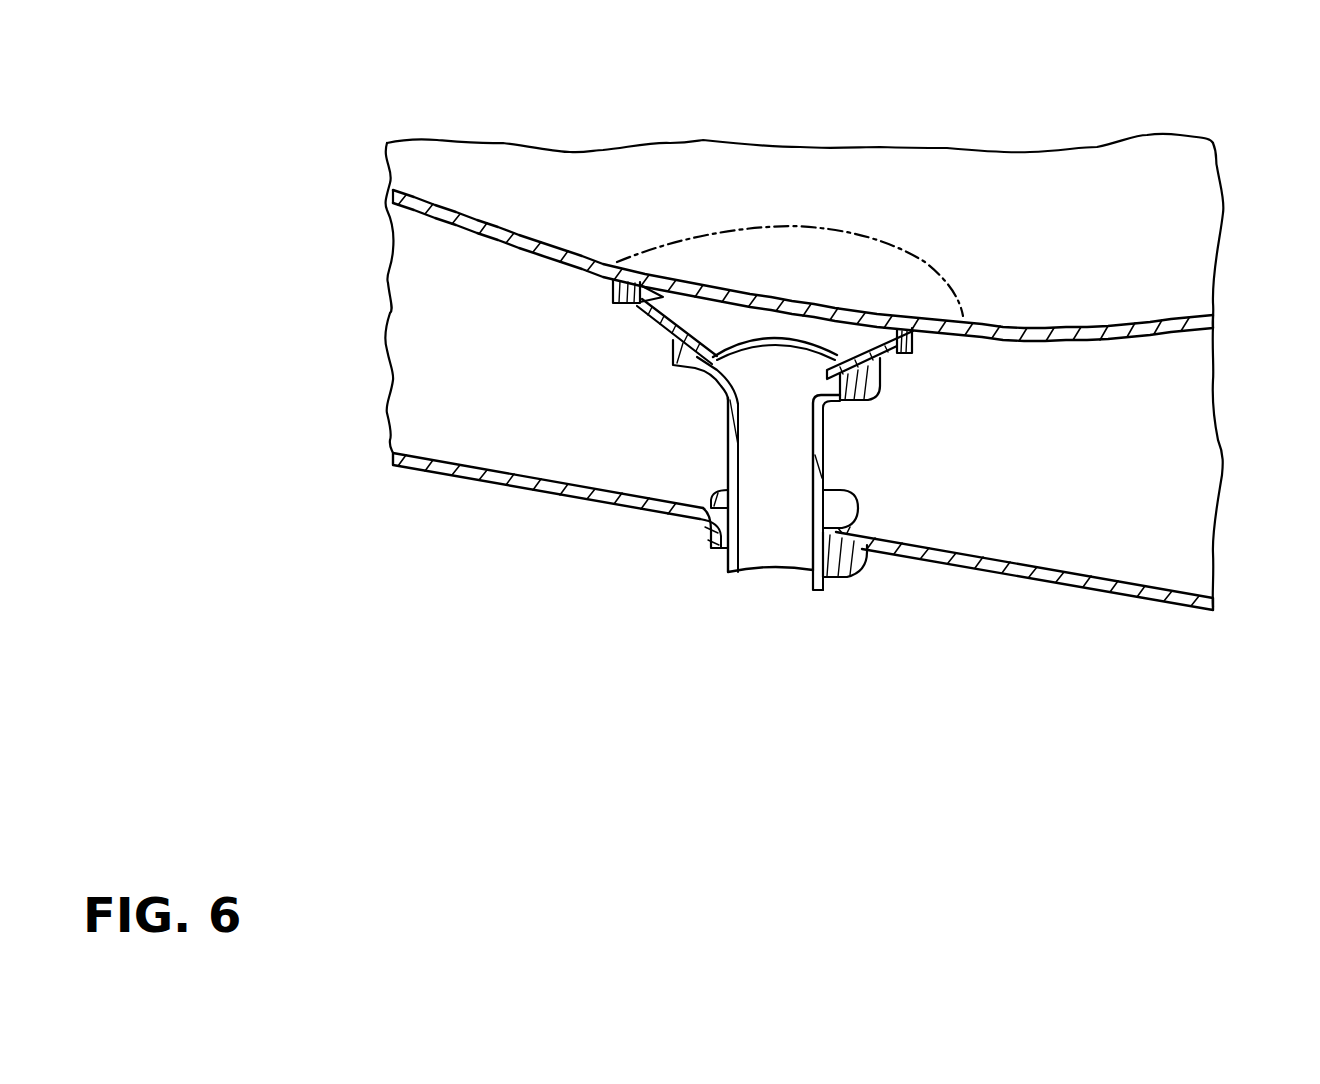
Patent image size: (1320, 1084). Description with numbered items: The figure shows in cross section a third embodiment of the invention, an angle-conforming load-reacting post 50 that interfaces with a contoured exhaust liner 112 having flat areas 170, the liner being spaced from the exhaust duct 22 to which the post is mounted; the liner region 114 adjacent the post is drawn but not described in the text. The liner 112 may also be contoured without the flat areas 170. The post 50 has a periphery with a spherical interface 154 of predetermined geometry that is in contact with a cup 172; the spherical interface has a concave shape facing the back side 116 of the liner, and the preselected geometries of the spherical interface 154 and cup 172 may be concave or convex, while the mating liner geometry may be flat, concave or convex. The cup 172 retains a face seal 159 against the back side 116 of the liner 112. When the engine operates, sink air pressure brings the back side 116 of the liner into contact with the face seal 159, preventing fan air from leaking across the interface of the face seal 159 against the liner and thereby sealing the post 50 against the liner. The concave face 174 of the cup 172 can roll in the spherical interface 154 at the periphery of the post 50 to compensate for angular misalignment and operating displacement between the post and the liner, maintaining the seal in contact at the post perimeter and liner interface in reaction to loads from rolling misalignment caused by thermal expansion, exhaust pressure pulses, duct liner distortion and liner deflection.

The exhaust duct 22 is at (1180, 598).
The angle-conforming load-reacting post 50 is at (727, 447).
The contoured exhaust liner 112 is at (390, 167).
The upper panel surface 114 is at (522, 168).
The back side of exhaust liner 116 is at (1180, 333).
The spherical interface 154 is at (880, 373).
The face seal 159 is at (613, 290).
The flat areas 170 is at (865, 262).
The cup 172 is at (681, 307).
The concave face of cup 174 is at (847, 388).